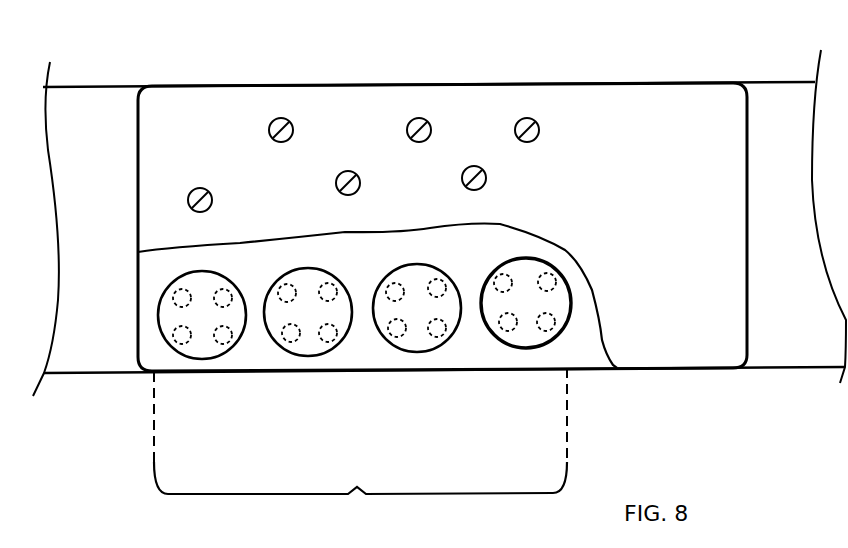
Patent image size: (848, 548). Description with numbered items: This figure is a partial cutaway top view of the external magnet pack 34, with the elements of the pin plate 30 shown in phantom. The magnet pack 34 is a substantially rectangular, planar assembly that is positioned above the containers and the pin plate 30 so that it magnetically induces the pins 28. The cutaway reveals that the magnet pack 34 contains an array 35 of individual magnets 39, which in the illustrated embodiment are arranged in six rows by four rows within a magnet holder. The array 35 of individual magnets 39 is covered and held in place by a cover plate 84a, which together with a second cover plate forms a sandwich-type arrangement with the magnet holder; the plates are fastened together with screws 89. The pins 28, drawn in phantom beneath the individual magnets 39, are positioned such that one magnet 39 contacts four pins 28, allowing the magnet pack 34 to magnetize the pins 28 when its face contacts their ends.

The pin plate 30 is at (88, 133).
The cover plate 84a is at (212, 113).
The magnet pack 34 is at (666, 113).
The screws 89 is at (527, 122).
The individual magnets 39 is at (195, 352).
The pins 28 is at (288, 342).
The magnet array 35 is at (360, 447).